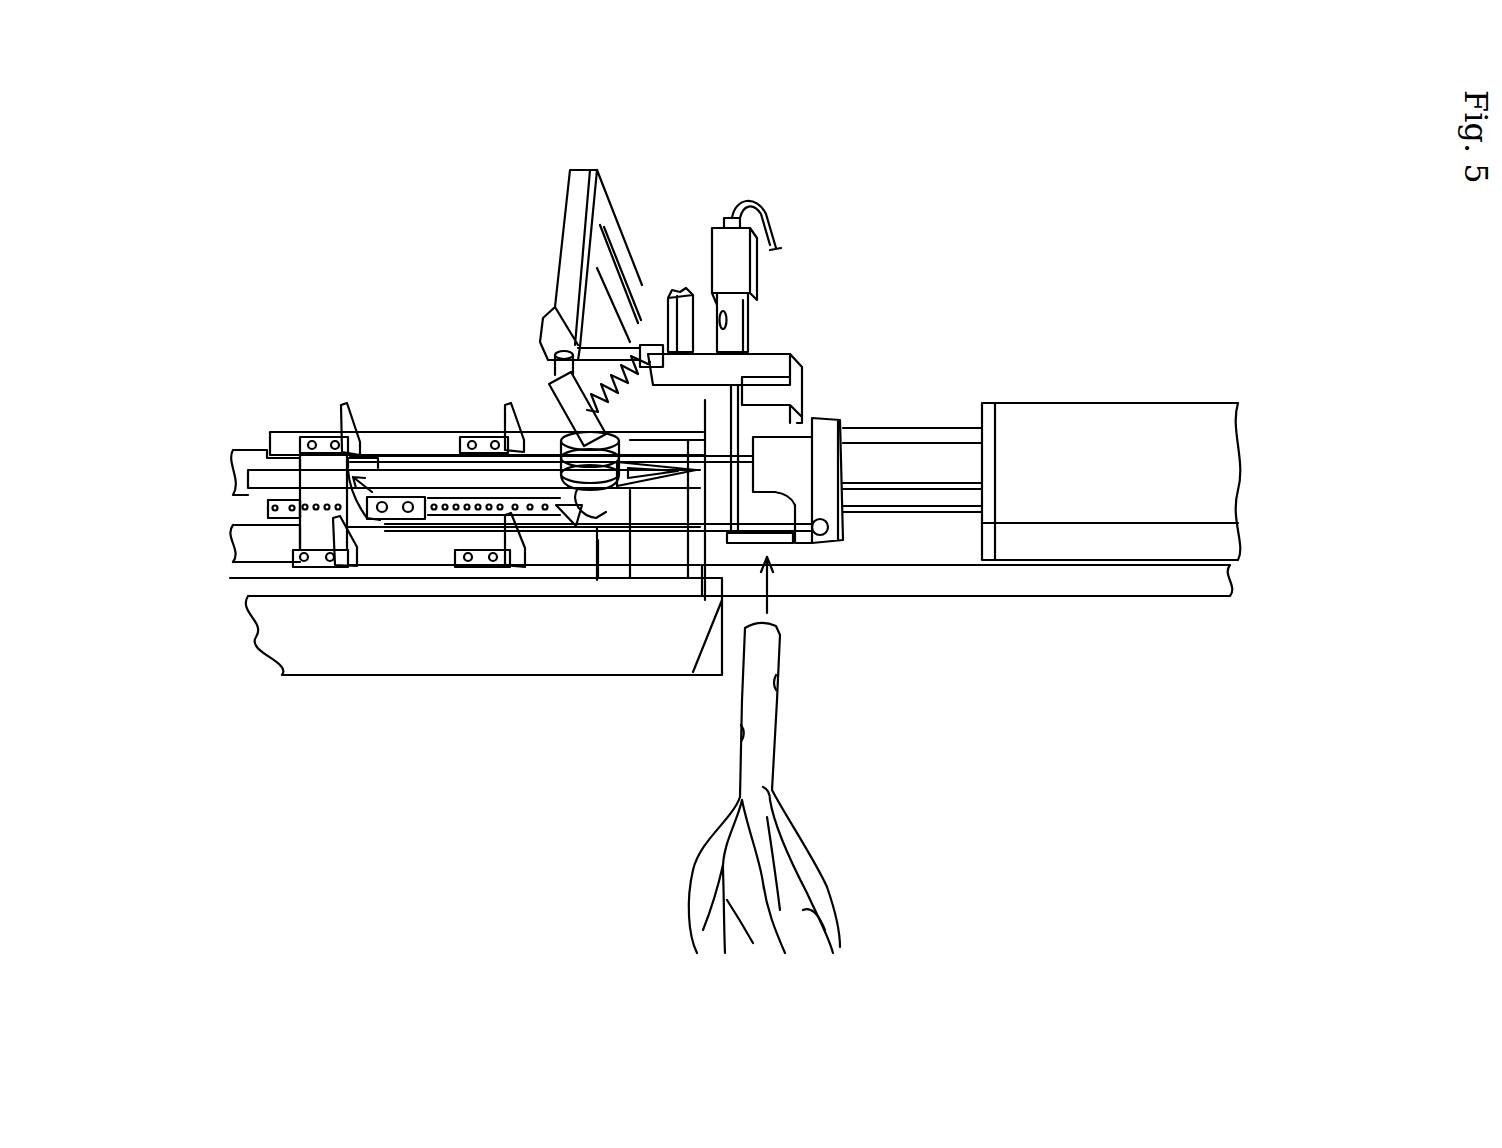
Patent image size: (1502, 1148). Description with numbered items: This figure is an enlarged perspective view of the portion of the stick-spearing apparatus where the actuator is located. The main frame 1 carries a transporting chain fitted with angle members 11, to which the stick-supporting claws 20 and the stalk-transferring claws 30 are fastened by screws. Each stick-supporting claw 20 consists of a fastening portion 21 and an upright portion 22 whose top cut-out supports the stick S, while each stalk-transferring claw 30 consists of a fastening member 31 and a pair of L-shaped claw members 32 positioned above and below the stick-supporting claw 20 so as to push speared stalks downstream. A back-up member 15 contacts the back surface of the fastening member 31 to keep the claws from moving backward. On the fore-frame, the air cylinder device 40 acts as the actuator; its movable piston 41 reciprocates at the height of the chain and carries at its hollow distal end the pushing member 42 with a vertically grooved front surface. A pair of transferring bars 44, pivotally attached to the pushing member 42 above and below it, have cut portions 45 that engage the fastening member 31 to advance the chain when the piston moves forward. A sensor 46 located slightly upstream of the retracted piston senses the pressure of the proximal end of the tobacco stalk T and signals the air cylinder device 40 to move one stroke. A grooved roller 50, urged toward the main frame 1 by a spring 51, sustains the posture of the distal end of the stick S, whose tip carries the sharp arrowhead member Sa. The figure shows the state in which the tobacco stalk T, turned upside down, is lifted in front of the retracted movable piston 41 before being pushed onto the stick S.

The main frame 1 is at (450, 658).
The angle members 11 is at (435, 510).
The back-up member 15 is at (245, 452).
The stick-supporting claws 20 is at (388, 445).
The fastening portion 21 is at (405, 453).
The upright portion 22 is at (358, 450).
The stalk-transferring claws 30 is at (280, 545).
The fastening member 31 is at (310, 530).
The claw members 32 is at (317, 567).
The air cylinder device 40 is at (1139, 568).
The movable piston 41 is at (935, 460).
The pushing member 42 is at (850, 527).
The transferring bars 44 is at (753, 527).
The cut portion 45 is at (598, 540).
The sensor 46 is at (772, 363).
The grooved roller 50 is at (563, 430).
The spring 51 is at (638, 283).
The stick S is at (440, 462).
The arrowhead member Sa is at (642, 480).
The tobacco stalk T is at (765, 738).